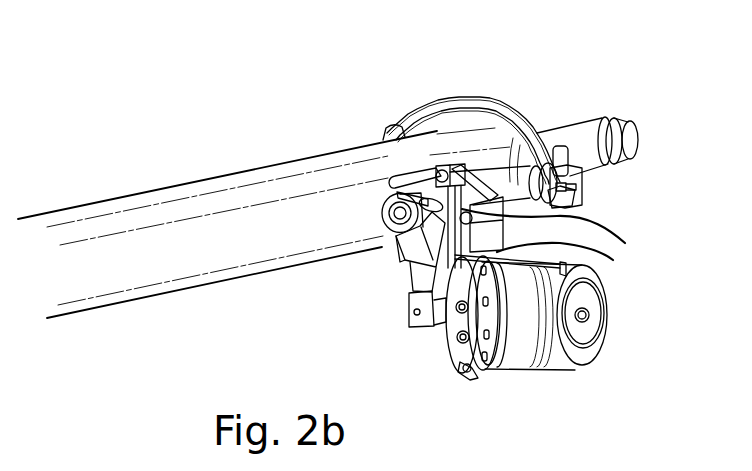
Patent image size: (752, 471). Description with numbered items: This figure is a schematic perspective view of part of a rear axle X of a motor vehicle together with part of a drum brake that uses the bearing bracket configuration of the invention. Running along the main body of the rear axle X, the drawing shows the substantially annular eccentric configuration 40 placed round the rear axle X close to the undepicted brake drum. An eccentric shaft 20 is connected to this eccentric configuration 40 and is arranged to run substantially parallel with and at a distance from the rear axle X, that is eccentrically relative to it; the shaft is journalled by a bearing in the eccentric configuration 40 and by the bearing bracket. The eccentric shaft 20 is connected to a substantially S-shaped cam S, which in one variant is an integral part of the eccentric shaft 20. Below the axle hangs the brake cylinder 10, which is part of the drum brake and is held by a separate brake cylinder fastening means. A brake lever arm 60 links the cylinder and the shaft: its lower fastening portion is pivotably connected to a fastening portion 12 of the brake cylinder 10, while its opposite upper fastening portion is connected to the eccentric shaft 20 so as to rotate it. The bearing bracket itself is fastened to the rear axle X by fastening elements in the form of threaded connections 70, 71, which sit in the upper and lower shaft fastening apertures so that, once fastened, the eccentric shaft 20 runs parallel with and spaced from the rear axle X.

The rear axle X is at (221, 172).
The eccentric configuration 40 is at (470, 94).
The eccentric shaft 20 is at (491, 174).
The cam S is at (577, 191).
The brake lever arm 60 is at (411, 270).
The fastening portion 12 is at (422, 320).
The threaded connection 70 is at (561, 236).
The threaded connection 71 is at (569, 264).
The brake cylinder 10 is at (539, 373).